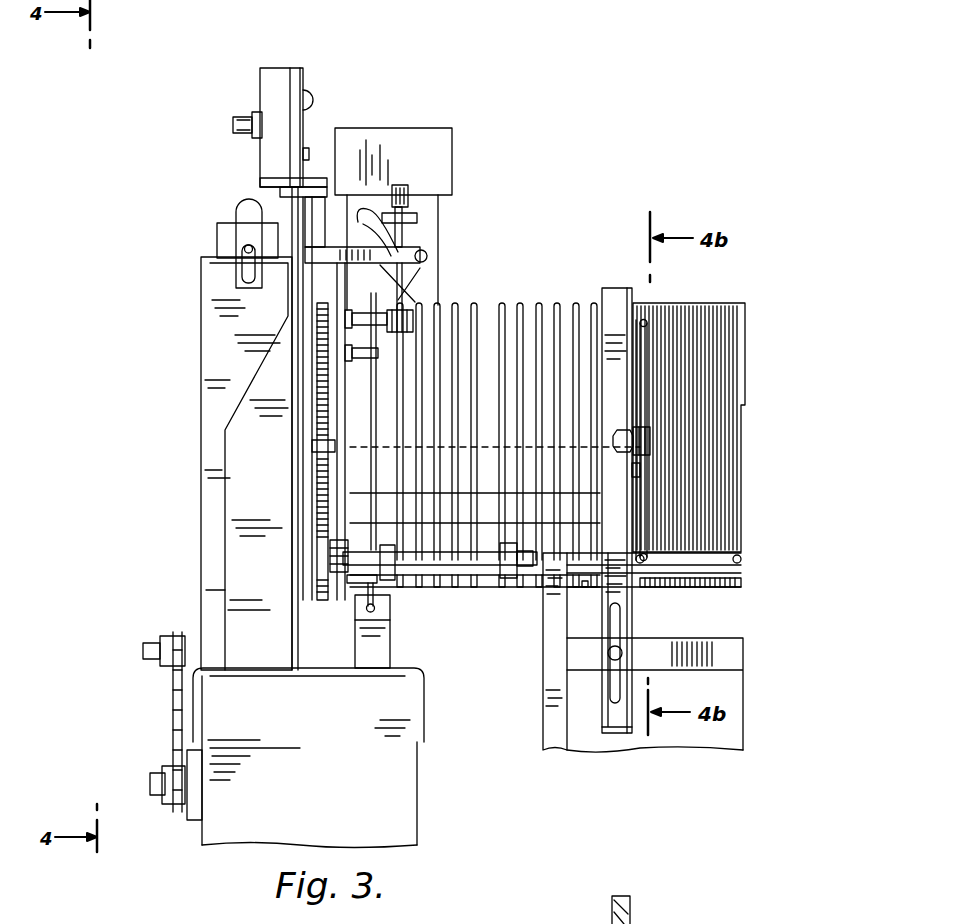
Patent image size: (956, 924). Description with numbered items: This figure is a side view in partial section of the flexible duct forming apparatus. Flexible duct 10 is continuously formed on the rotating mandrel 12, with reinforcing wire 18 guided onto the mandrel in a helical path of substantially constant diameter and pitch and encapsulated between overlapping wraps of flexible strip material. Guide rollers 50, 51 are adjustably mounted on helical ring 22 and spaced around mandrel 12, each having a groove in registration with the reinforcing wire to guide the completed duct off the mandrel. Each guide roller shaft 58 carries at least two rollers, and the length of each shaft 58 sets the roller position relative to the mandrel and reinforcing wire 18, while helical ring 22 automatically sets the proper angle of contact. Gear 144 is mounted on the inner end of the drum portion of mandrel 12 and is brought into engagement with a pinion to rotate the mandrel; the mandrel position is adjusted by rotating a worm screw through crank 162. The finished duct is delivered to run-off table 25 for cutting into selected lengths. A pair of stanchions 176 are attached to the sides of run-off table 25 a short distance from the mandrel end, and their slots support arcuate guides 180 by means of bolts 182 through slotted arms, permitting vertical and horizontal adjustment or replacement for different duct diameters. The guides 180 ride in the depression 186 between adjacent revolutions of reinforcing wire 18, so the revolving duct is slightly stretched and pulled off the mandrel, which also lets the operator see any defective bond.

The flexible duct 10 is at (743, 533).
The mandrel 12 is at (455, 586).
The reinforcing wire 18 is at (500, 302).
The helical ring 22 is at (333, 478).
The run-off table 25 is at (707, 638).
The guide roller 50 is at (397, 586).
The guide roller 51 is at (415, 303).
The guide roller shaft 58 is at (412, 325).
The gear 144 is at (340, 537).
The crank 162 is at (243, 240).
The stanchion 176 is at (633, 612).
The guide 180 is at (645, 320).
The bolt 182 is at (647, 440).
The depression 186 is at (585, 300).